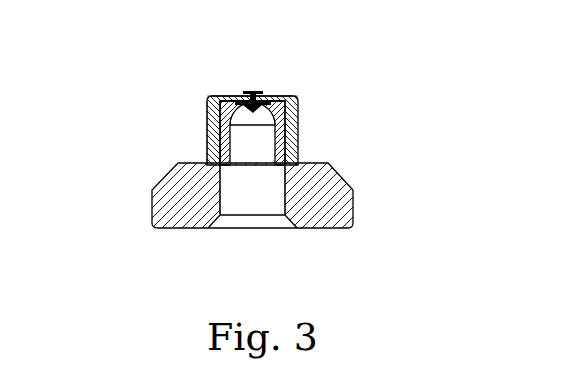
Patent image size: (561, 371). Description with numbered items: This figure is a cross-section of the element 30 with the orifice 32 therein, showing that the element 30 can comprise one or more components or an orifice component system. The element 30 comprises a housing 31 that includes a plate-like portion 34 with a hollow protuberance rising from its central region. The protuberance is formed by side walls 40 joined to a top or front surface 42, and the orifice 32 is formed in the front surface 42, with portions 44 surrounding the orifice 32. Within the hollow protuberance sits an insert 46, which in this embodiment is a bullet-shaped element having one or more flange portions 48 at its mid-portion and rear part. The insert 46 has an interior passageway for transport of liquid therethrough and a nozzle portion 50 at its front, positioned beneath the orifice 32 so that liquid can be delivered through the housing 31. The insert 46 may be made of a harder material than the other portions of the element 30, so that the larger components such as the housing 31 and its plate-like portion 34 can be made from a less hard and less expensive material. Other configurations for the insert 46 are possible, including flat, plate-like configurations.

The element 30 is at (325, 130).
The housing 31 is at (298, 103).
The orifice 32 is at (253, 89).
The plate-like portion 34 is at (188, 162).
The side walls 40 is at (207, 108).
The front surface 42 is at (236, 99).
The portions surrounding the orifice 44 is at (273, 96).
The insert 46 is at (240, 136).
The flange portions 48 is at (297, 164).
The nozzle portion 50 is at (298, 135).